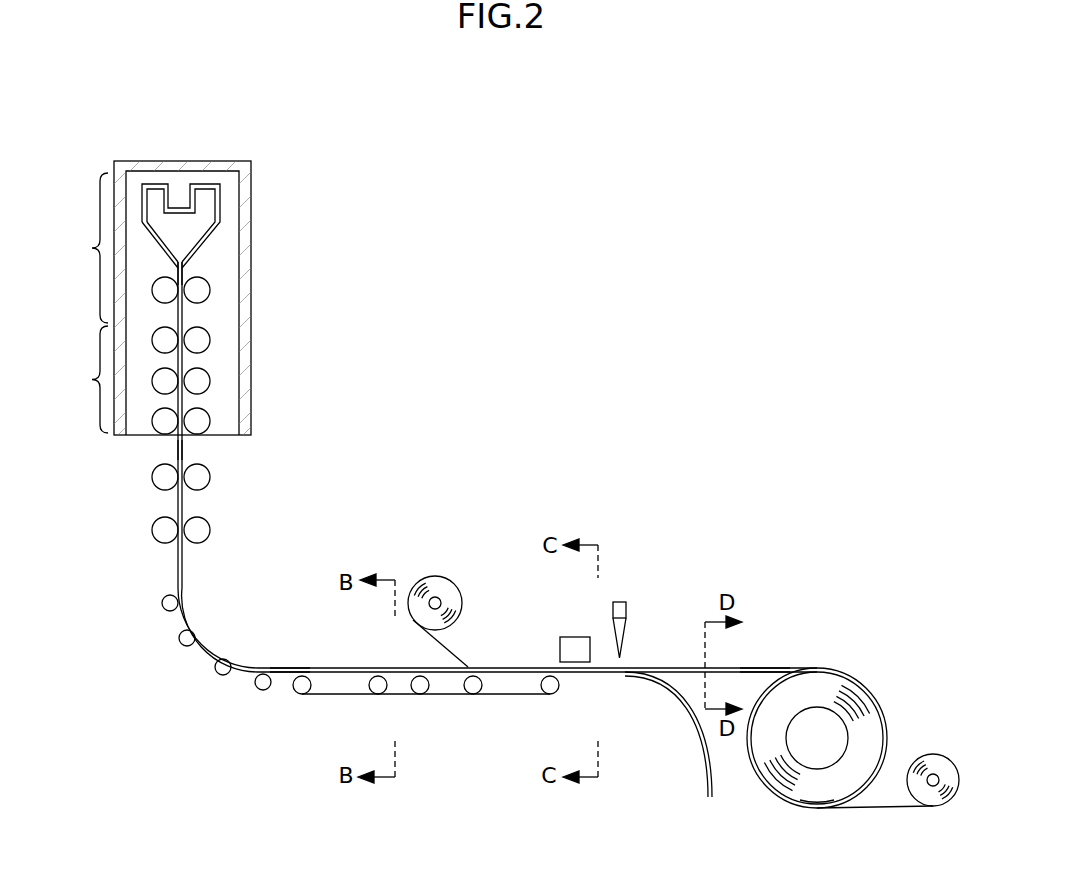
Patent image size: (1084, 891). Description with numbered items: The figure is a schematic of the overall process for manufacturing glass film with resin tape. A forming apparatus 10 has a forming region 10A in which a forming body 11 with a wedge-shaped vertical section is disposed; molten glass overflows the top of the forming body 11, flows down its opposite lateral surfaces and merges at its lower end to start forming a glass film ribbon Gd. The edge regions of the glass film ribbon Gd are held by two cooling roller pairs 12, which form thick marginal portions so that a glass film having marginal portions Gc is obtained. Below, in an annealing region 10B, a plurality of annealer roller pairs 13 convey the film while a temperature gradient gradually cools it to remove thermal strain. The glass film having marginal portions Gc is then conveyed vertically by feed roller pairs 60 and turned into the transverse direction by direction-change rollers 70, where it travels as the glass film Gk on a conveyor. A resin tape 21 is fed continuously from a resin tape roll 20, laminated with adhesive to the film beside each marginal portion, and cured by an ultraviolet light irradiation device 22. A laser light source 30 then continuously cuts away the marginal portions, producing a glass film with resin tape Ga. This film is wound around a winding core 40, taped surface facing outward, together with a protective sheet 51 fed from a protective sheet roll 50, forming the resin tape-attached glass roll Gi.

The forming apparatus 10 is at (258, 152).
The forming region 10A is at (74, 248).
The annealing region 10B is at (74, 379).
The forming body 11 is at (198, 218).
The glass film ribbon Gd is at (184, 272).
The cooling roller pairs 12 is at (200, 292).
The annealer roller pairs 13 is at (200, 340).
The glass film having marginal portions Gc is at (184, 448).
The feed roller pairs 60 is at (200, 481).
The direction-change rollers 70 is at (167, 604).
The glass film Gk is at (287, 668).
The resin tape roll 20 is at (430, 578).
The resin tape 21 is at (452, 652).
The ultraviolet light irradiation device 22 is at (574, 637).
The laser light source 30 is at (619, 602).
The glass film with resin tape Ga is at (758, 668).
The winding core 40 is at (780, 797).
The resin tape-attached glass roll Gi is at (820, 790).
The protective sheet roll 50 is at (934, 754).
The protective sheet 51 is at (890, 807).